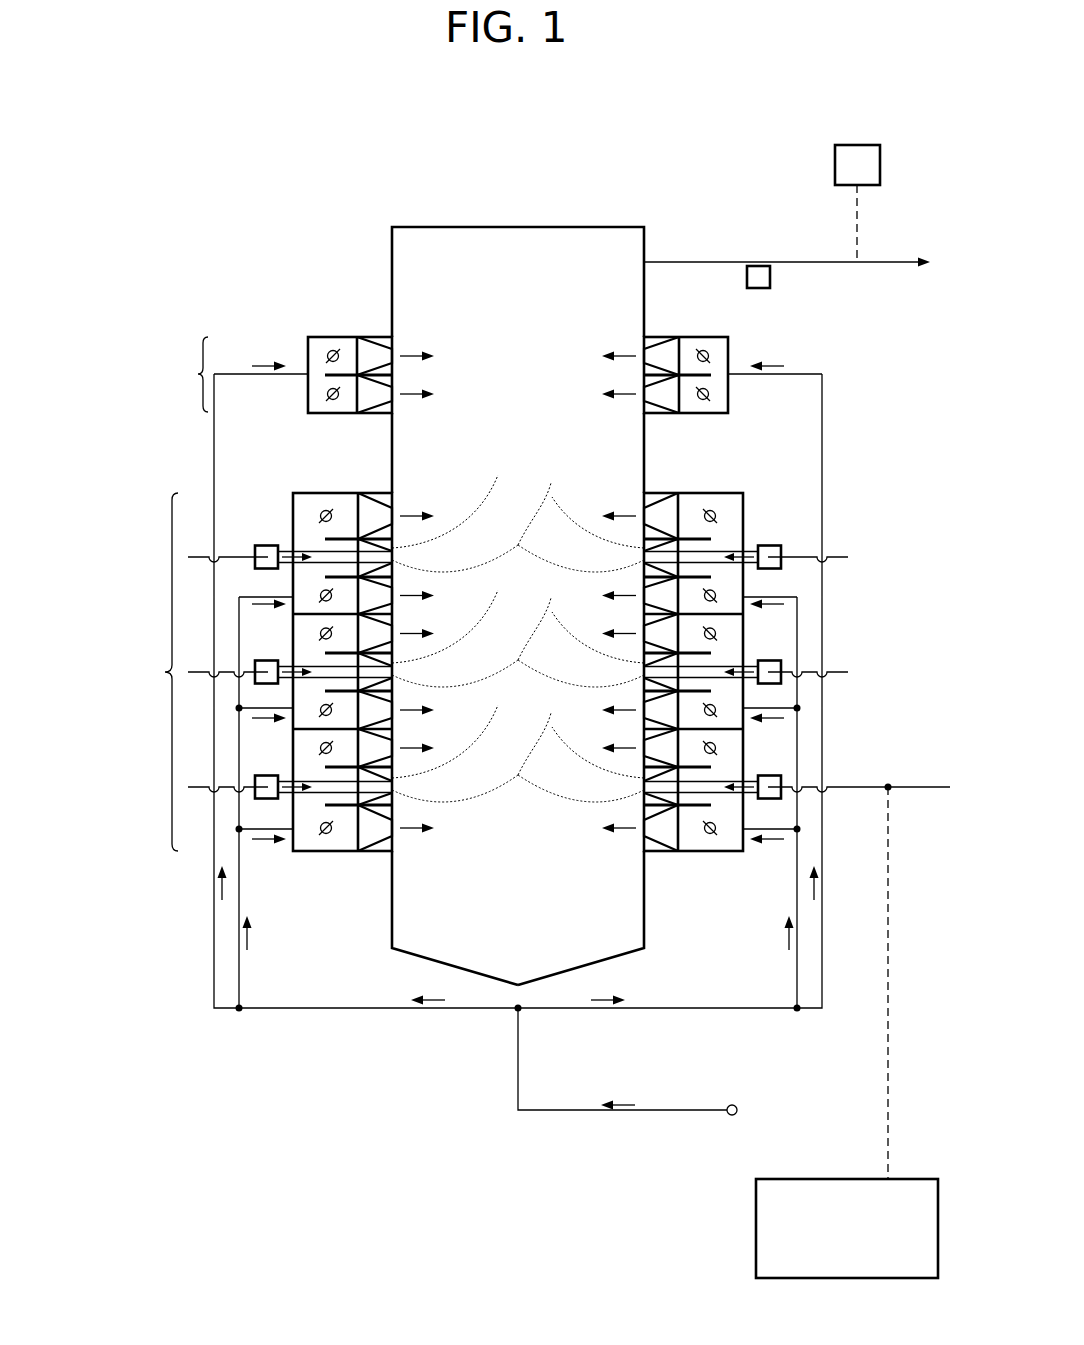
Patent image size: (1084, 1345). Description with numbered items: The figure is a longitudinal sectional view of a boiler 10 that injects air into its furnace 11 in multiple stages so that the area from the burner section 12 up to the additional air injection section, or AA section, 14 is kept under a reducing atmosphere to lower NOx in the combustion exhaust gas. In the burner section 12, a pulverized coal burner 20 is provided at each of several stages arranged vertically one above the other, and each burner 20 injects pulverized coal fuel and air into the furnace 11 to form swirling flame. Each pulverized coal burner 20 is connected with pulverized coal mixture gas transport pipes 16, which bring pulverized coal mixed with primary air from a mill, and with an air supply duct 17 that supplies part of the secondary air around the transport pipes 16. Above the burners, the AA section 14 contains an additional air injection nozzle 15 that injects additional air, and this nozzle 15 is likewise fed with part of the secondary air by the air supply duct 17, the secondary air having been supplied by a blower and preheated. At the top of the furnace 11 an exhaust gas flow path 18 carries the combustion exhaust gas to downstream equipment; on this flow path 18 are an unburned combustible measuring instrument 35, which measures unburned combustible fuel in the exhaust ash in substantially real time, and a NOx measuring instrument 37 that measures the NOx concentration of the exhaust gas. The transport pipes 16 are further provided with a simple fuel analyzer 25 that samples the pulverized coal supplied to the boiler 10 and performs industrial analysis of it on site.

The boiler 10 is at (590, 172).
The furnace 11 is at (628, 449).
The burner section 12 is at (401, 624).
The additional air injection section (AA section) 14 is at (198, 374).
The additional air injection nozzle 15 is at (310, 330).
The pulverized coal mixture gas transport pipe 16 is at (855, 783).
The air supply duct 17 is at (327, 1006).
The exhaust gas flow path 18 is at (792, 260).
The pulverized coal burner 20 is at (288, 486).
The simple fuel analyzer 25 is at (756, 1226).
The unburned combustible measuring instrument 35 is at (771, 276).
The NOx measuring instrument 37 is at (857, 144).